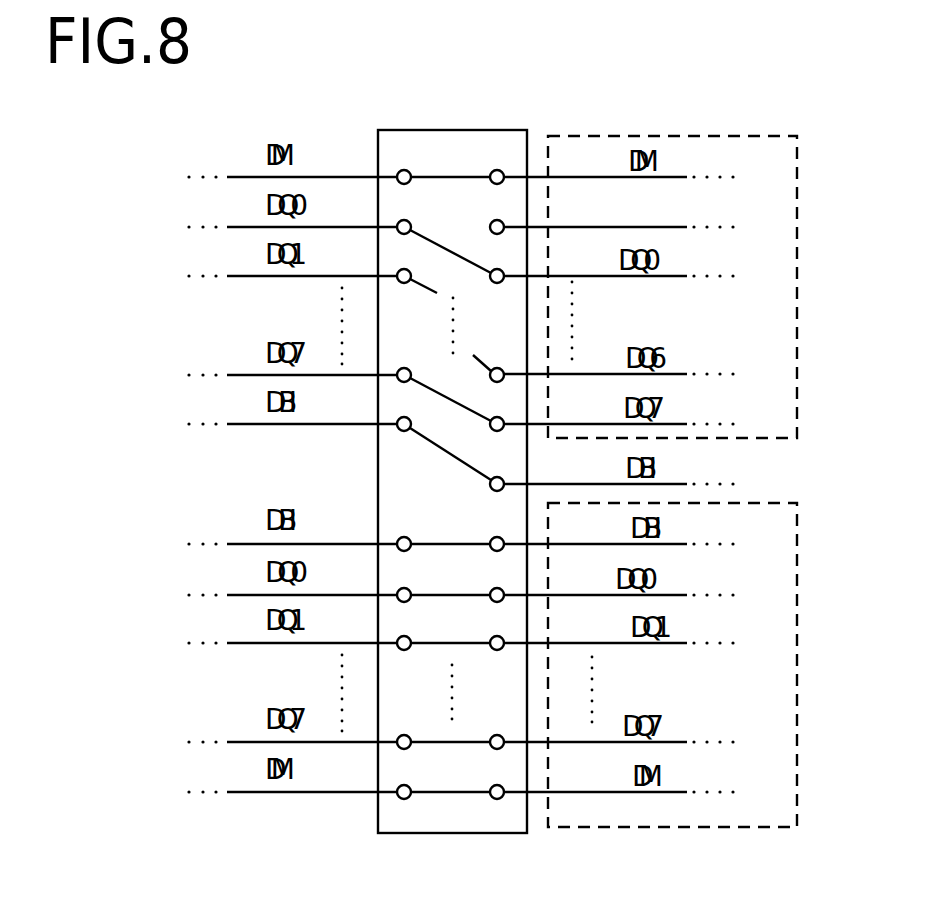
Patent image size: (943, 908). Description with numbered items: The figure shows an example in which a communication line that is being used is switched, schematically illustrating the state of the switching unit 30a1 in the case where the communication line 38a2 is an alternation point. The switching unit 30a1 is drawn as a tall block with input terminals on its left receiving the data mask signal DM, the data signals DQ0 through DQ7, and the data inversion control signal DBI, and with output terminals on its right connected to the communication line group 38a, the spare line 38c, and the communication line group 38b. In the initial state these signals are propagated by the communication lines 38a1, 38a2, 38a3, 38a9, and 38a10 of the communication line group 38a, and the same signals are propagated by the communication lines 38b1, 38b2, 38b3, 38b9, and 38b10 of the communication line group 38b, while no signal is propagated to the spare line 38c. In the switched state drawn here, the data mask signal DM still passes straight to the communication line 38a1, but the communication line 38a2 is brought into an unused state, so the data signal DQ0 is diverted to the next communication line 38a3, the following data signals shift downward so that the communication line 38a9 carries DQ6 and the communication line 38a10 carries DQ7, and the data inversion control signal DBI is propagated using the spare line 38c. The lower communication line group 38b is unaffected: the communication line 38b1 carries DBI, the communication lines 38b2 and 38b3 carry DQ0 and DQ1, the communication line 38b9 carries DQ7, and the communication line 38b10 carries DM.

The switching unit 30a1 is at (435, 130).
The communication line group 38a is at (707, 136).
The communication line 38a1 is at (687, 177).
The communication line 38a2 is at (683, 227).
The communication line 38a3 is at (683, 276).
The communication line 38a9 is at (683, 374).
The communication line 38a10 is at (680, 424).
The spare line 38c is at (673, 484).
The communication line group 38b is at (653, 827).
The communication line 38b1 is at (675, 544).
The communication line 38b2 is at (658, 595).
The communication line 38b3 is at (680, 643).
The communication line 38b9 is at (680, 742).
The communication line 38b10 is at (680, 792).